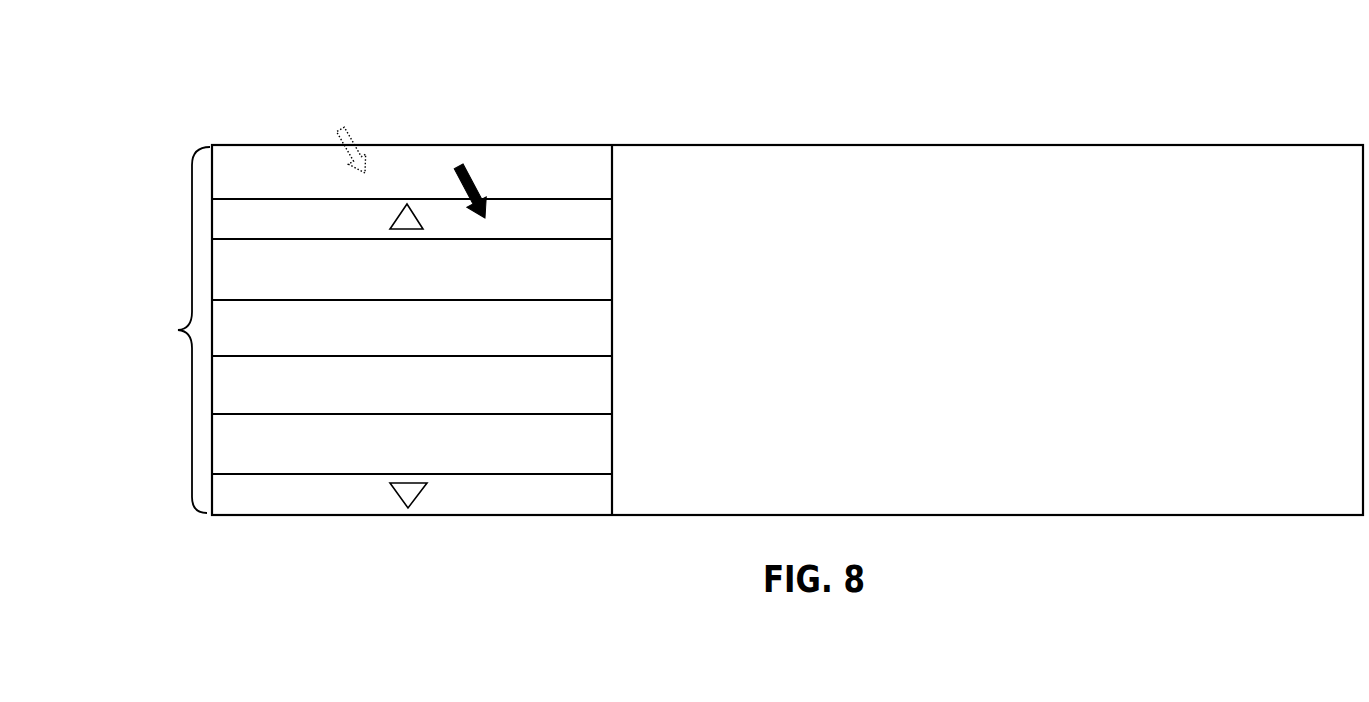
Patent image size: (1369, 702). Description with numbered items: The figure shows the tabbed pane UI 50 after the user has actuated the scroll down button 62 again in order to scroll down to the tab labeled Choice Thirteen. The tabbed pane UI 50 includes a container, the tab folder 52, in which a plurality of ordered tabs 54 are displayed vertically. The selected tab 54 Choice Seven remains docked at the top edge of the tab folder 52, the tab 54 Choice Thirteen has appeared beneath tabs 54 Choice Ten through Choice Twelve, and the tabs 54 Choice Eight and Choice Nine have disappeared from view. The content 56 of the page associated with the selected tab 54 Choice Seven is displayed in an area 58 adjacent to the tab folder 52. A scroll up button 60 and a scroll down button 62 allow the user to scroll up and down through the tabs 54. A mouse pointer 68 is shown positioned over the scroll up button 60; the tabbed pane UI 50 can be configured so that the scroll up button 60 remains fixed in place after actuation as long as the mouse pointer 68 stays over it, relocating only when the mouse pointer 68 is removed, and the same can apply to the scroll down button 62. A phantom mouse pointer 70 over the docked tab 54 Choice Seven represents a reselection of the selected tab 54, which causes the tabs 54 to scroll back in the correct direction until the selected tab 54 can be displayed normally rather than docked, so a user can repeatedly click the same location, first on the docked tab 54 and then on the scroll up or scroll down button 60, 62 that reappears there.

The tabbed pane UI 50 is at (126, 174).
The tab folder 52 is at (178, 330).
The tabs 54 is at (595, 212).
The content 56 is at (908, 281).
The area 58 is at (1330, 196).
The scroll up button 60 is at (443, 220).
The scroll down button 62 is at (447, 500).
The mouse pointer 68 is at (507, 163).
The phantom mouse pointer 70 is at (387, 127).